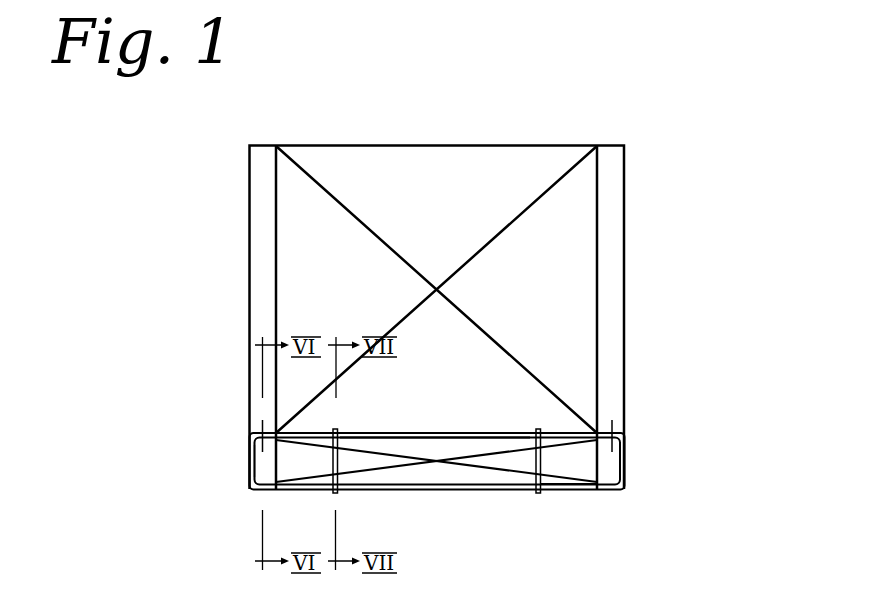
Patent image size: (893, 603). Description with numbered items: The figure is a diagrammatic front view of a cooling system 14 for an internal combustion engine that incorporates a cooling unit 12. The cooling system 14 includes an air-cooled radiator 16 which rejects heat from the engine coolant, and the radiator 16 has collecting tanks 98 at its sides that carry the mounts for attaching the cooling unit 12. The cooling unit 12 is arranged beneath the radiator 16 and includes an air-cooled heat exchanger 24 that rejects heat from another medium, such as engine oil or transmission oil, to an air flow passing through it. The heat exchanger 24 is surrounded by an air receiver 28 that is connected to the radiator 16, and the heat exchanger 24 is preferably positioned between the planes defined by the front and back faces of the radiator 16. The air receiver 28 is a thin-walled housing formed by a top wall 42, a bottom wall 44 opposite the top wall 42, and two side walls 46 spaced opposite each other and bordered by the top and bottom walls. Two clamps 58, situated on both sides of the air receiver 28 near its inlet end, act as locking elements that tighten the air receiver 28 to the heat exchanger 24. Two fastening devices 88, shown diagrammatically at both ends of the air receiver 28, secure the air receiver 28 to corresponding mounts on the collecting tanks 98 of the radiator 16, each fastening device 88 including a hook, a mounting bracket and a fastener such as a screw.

The cooling unit 12 is at (655, 455).
The cooling system 14 is at (714, 137).
The air-cooled radiator 16 is at (518, 160).
The air-cooled heat exchanger 24 is at (453, 472).
The air receiver 28 is at (427, 490).
The top wall 42 is at (425, 431).
The bottom wall 44 is at (568, 490).
The side walls 46 is at (252, 462).
The clamps 58 is at (336, 428).
The fastening devices 88 is at (613, 427).
The collecting tanks 98 is at (257, 258).